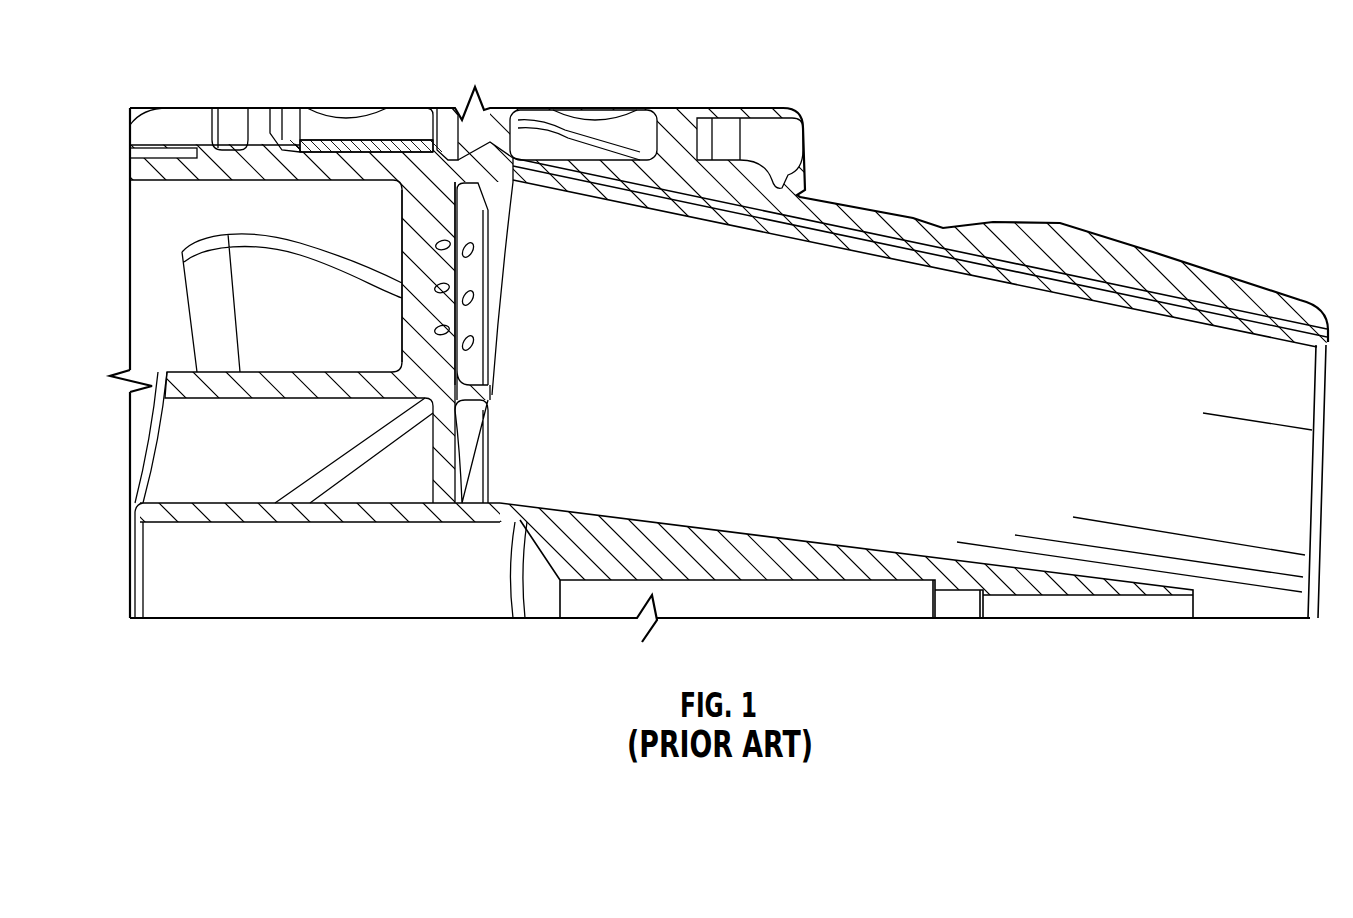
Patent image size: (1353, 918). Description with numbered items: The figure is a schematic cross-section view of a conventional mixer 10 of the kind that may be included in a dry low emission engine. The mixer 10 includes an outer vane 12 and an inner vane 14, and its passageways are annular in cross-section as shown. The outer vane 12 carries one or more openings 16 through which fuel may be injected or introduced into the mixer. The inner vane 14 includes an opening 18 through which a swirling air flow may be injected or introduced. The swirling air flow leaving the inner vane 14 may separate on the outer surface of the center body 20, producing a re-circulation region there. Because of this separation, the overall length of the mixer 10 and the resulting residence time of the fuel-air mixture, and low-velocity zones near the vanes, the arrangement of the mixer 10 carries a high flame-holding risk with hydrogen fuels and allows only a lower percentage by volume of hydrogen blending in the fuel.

The mixer 10 is at (200, 58).
The outer vane 12 is at (428, 258).
The inner vane 14 is at (393, 462).
The openings 16 is at (480, 253).
The opening 18 is at (480, 463).
The center body 20 is at (903, 540).